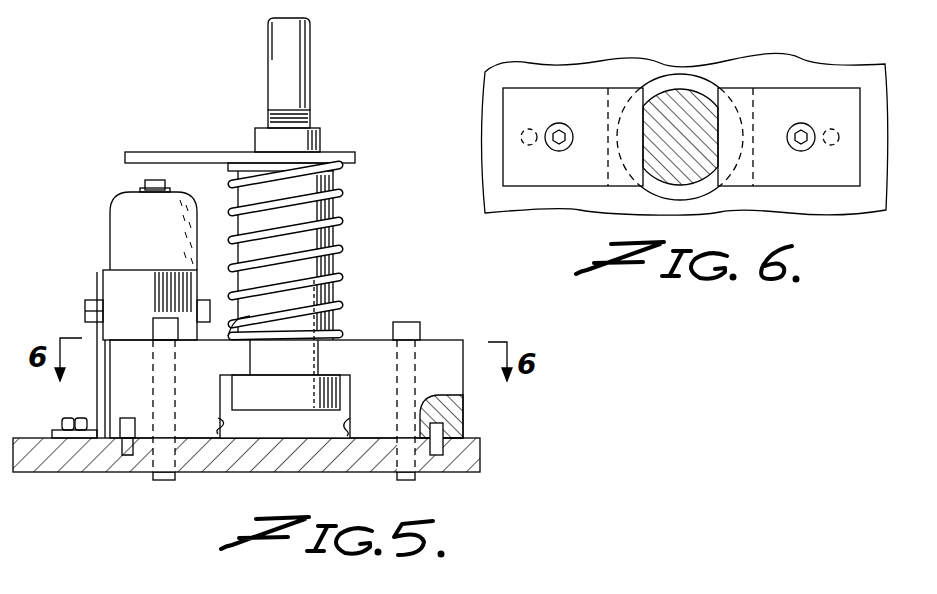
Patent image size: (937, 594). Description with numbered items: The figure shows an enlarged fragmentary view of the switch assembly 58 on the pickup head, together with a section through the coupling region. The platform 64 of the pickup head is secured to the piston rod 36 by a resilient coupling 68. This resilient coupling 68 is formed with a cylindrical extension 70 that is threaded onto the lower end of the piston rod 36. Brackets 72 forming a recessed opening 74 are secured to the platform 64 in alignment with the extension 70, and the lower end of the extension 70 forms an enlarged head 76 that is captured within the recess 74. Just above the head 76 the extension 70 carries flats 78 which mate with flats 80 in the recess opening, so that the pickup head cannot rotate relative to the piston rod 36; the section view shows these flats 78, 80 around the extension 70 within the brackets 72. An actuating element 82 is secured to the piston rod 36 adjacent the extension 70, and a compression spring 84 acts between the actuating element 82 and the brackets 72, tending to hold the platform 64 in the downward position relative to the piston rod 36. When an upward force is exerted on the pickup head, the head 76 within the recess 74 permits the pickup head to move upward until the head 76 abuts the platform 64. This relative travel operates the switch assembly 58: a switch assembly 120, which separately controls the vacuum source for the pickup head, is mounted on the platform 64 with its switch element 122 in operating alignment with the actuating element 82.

In FIG. 5, the piston rod 36 is at (312, 45).
In FIG. 5, the switch assembly 58 is at (112, 161).
In FIG. 5, the platform 64 is at (467, 455).
In FIG. 6, the platform 64 is at (808, 63).
In FIG. 5, the resilient coupling 68 is at (368, 171).
In FIG. 5, the cylindrical extension 70 is at (340, 209).
In FIG. 6, the cylindrical extension 70 is at (705, 180).
In FIG. 5, the brackets 72 is at (118, 405).
In FIG. 6, the brackets 72 is at (550, 88).
In FIG. 5, the recessed opening 74 is at (218, 425).
In FIG. 5, the enlarged head 76 is at (292, 392).
In FIG. 6, the enlarged head 76 is at (650, 186).
In FIG. 5, the flats 78 is at (330, 323).
In FIG. 6, the flats 78 is at (655, 133).
In FIG. 5, the flats 80 is at (250, 362).
In FIG. 6, the flats 80 is at (699, 100).
In FIG. 5, the actuating element 82 is at (182, 150).
In FIG. 5, the compression spring 84 is at (345, 185).
In FIG. 5, the switch assembly 120 is at (110, 233).
In FIG. 5, the switch element 122 is at (145, 184).